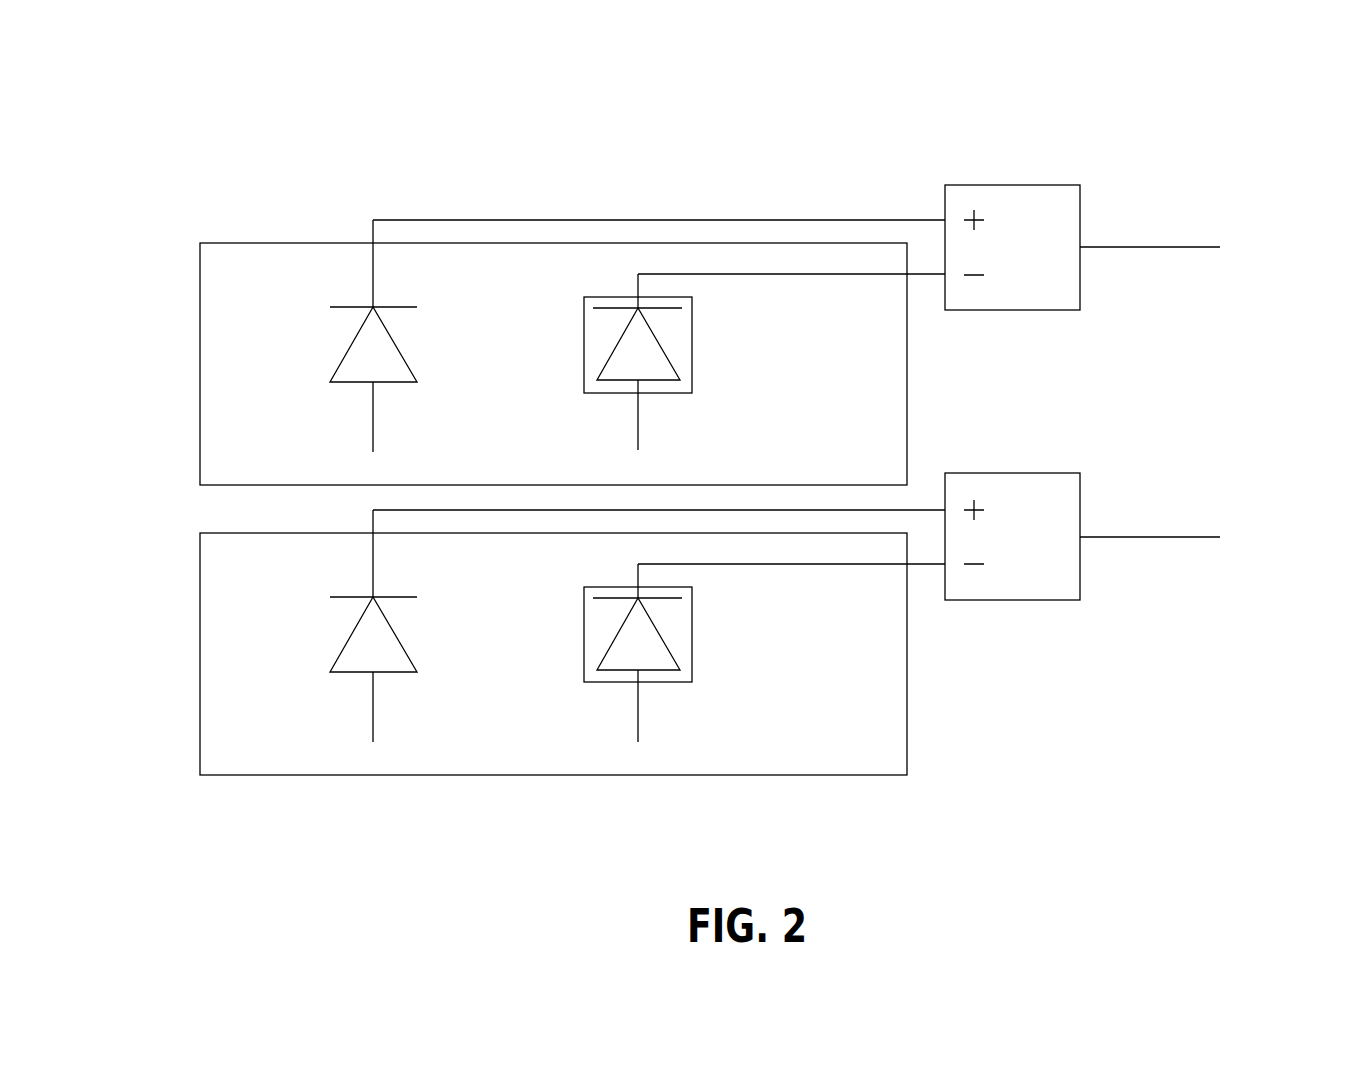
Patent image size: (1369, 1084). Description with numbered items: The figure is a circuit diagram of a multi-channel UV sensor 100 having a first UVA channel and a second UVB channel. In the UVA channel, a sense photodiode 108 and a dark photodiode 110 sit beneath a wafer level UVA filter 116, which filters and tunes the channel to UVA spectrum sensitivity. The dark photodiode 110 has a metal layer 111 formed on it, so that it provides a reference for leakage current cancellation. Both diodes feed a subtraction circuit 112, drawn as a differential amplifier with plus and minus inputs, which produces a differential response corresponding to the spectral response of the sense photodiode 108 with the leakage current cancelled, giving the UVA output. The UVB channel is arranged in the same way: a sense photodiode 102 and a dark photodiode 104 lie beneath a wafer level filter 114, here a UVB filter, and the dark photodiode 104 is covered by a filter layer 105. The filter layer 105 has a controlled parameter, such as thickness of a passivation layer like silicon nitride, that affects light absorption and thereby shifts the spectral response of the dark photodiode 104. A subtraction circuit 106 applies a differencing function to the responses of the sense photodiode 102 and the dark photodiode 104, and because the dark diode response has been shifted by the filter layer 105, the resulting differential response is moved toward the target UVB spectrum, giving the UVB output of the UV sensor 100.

The UV sensor 100 is at (204, 100).
The sense photodiode 102 is at (353, 672).
The dark photodiode 104 is at (660, 672).
The filter layer 105 is at (692, 635).
The subtraction circuit 106 is at (1012, 473).
The sense photodiode 108 is at (352, 383).
The dark photodiode 110 is at (658, 383).
The metal layer 111 is at (692, 367).
The subtraction circuit 112 is at (1012, 185).
The wafer level filter 114 is at (215, 533).
The wafer level UVA filter 116 is at (213, 243).